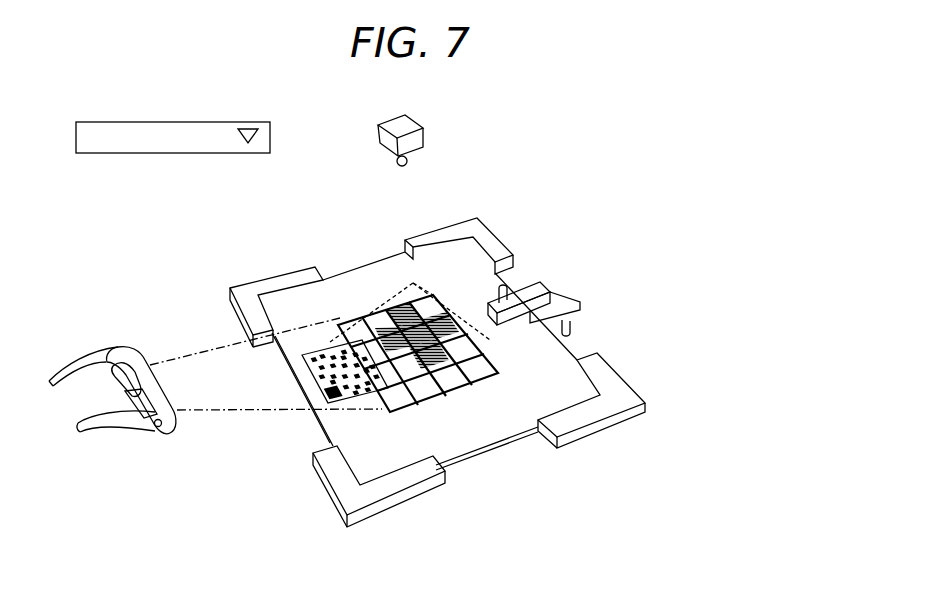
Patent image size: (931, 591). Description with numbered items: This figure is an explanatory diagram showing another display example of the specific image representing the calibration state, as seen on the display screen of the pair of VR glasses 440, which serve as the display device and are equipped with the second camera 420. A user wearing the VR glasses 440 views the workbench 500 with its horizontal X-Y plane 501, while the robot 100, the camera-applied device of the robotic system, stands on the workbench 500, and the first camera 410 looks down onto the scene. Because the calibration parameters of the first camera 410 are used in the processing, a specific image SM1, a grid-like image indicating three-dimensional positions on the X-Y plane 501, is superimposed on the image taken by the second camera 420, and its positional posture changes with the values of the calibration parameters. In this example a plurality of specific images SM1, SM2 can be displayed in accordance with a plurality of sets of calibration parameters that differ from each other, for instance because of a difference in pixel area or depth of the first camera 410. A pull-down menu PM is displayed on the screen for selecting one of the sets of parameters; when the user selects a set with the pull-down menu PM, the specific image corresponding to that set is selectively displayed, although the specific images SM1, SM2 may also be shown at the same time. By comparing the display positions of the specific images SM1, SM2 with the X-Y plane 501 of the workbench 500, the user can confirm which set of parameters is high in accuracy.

The pull-down menu PM is at (270, 137).
The first camera 410 is at (405, 115).
The pair of VR glasses 440 is at (88, 348).
The second camera 420 is at (162, 435).
The X-Y plane 501 is at (408, 456).
The workbench 500 is at (475, 457).
The specific image SM2 is at (437, 398).
The specific image SM1 is at (490, 340).
The robot 100 is at (563, 293).